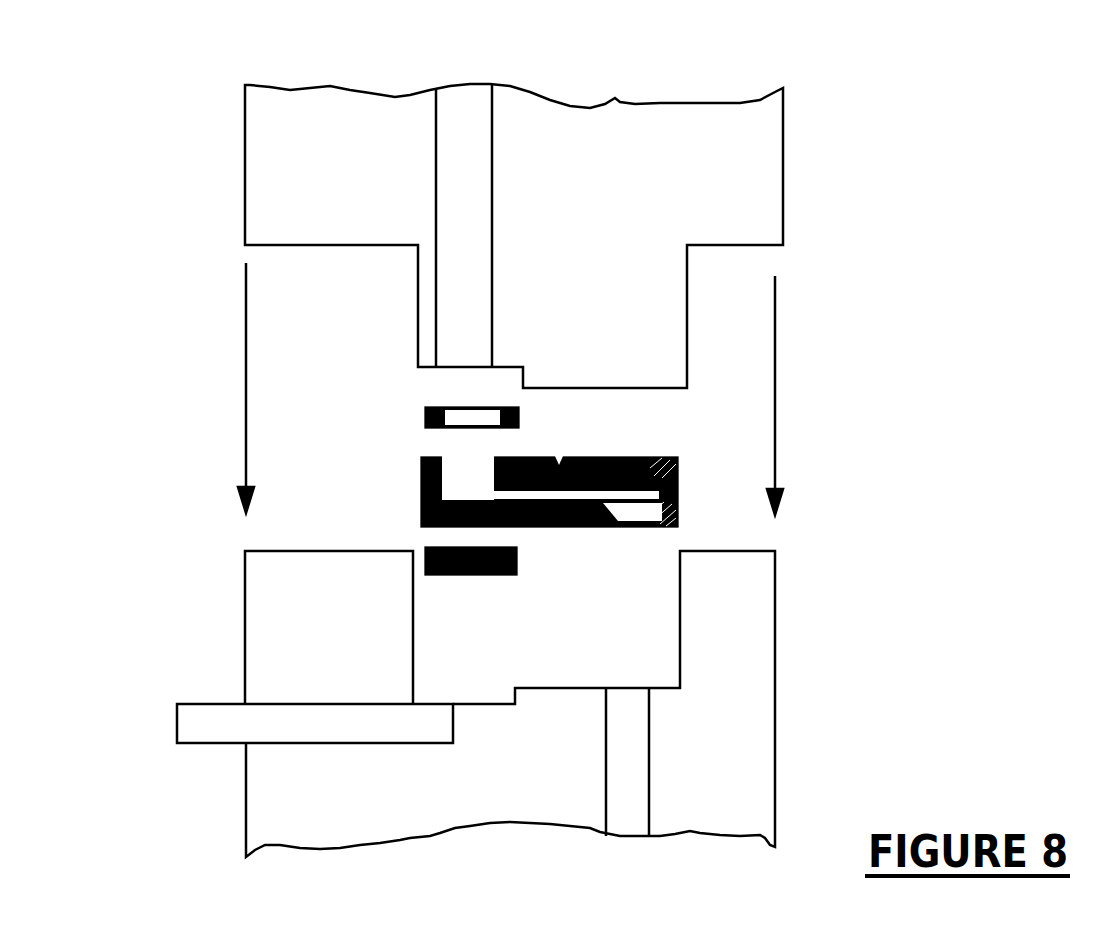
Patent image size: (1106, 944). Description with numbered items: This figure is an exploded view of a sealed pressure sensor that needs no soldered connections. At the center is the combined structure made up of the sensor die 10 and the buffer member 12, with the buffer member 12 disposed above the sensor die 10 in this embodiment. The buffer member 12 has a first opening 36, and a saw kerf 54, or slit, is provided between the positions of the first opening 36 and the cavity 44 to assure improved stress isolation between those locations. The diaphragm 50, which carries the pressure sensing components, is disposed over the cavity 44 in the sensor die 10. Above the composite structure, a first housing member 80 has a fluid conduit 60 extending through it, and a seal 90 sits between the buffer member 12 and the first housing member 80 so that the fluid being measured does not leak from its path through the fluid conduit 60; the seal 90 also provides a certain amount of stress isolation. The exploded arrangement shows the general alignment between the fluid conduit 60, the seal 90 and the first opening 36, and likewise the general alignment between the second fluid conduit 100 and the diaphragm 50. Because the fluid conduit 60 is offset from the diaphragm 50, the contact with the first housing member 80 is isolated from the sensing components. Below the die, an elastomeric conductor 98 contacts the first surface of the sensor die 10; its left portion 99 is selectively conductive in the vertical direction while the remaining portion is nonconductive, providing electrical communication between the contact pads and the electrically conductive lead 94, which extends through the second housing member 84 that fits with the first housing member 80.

The sensor die 10 is at (528, 527).
The buffer member 12 is at (562, 490).
The first opening 36 is at (470, 467).
The cavity 44 is at (650, 512).
The diaphragm 50 is at (628, 527).
The saw kerf 54 is at (559, 457).
The fluid conduit 60 is at (452, 107).
The first housing member 80 is at (765, 147).
The second housing member 84 is at (275, 573).
The seal 90 is at (425, 412).
The electrically conductive lead 94 is at (223, 722).
The elastomeric conductor 98 is at (512, 577).
The selectively conductive portion of the elastomeric conductor 99 is at (430, 577).
The second fluid conduit 100 is at (632, 812).